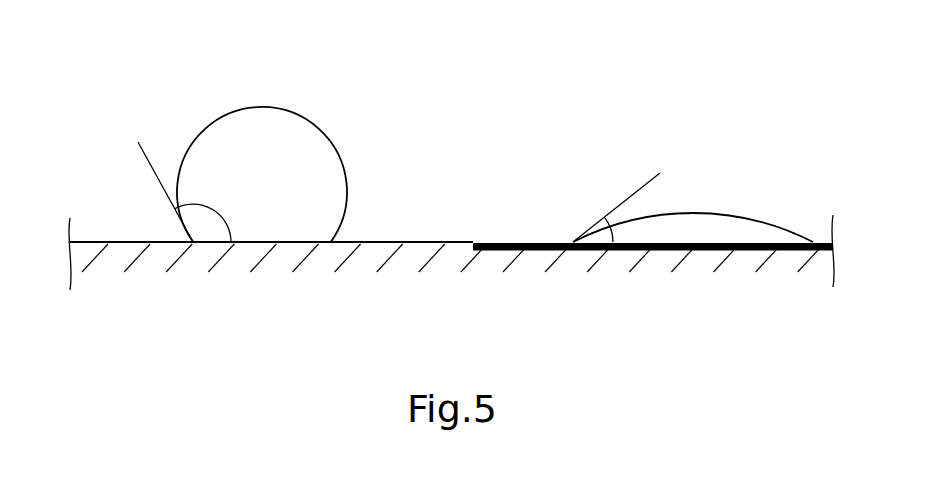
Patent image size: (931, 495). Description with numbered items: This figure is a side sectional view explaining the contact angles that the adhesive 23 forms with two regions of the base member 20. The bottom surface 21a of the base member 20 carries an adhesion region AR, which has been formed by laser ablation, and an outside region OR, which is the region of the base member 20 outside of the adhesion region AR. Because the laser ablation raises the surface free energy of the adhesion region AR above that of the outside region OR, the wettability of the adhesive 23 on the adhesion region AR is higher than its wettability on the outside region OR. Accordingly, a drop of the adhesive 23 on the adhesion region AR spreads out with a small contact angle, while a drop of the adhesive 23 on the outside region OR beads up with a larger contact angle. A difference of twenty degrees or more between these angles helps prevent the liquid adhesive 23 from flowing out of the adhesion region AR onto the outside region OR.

The base member 20 is at (430, 240).
The bottom surface 21a is at (128, 242).
The adhesive 23 is at (283, 142).
The outside region OR is at (235, 242).
The adhesion region AR is at (662, 253).